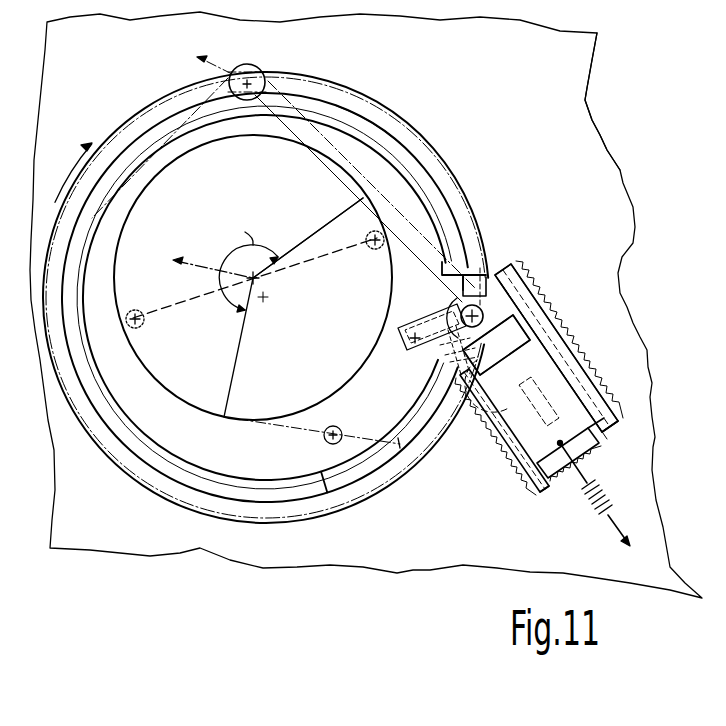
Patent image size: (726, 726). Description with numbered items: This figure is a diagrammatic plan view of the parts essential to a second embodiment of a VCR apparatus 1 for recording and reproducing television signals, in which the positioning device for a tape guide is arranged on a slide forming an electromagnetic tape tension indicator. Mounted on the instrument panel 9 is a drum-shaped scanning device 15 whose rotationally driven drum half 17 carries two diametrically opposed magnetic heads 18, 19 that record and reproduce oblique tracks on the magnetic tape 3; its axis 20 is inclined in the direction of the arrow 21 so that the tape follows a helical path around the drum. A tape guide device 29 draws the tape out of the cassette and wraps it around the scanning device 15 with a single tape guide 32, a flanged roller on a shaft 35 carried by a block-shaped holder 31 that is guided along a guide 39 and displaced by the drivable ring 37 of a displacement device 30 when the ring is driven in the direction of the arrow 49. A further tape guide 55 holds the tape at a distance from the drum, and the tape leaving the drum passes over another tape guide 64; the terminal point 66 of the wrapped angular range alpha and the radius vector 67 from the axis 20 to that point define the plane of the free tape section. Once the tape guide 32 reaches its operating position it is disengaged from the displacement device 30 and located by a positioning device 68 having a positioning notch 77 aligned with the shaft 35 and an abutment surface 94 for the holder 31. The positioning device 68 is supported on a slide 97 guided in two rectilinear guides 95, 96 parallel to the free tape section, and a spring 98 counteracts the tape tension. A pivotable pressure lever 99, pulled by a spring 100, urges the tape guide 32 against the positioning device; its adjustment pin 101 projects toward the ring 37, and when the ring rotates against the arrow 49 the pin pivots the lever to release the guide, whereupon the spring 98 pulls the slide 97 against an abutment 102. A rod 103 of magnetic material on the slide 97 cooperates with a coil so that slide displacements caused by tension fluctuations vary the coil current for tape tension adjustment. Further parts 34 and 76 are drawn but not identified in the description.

The VCR apparatus 1 is at (148, 558).
The magnetic tape 3 is at (393, 185).
The instrument panel 9 is at (587, 88).
The drum-shaped scanning device 15 is at (140, 367).
The drum half 17 is at (207, 403).
The magnetic head 18 is at (142, 323).
The magnetic head 19 is at (376, 249).
The axis 20 is at (258, 279).
The arrow 21 is at (205, 258).
The tape guide device 29 is at (487, 271).
The displacement device 30 is at (162, 95).
The block-shaped holder 31 is at (452, 288).
The tape guide 32 is at (514, 318).
The block 34 is at (532, 336).
The shaft 35 is at (508, 311).
The ring 37 is at (115, 145).
The guide 39 is at (80, 312).
The arrow 49 is at (67, 177).
The further tape guide 55 is at (255, 66).
The further tape guide 64 is at (341, 430).
The terminal point 66 is at (363, 198).
The radius vector 67 is at (300, 243).
The positioning device 68 is at (526, 350).
The coupling 76 is at (480, 355).
The positioning notch 77 is at (500, 292).
The abutment surface 94 is at (490, 422).
The rectilinear guide 95 is at (538, 490).
The rectilinear guide 96 is at (608, 433).
The slide 97 is at (547, 468).
The spring 98 is at (592, 520).
The pressure lever 99 is at (453, 320).
The spring 100 is at (424, 352).
The adjustment pin 101 is at (476, 266).
The abutment 102 is at (600, 460).
The rod 103 is at (509, 456).